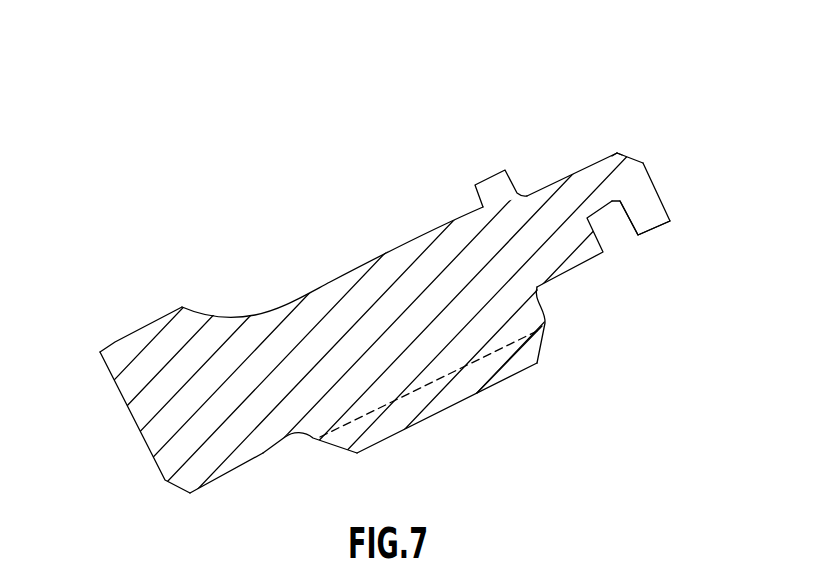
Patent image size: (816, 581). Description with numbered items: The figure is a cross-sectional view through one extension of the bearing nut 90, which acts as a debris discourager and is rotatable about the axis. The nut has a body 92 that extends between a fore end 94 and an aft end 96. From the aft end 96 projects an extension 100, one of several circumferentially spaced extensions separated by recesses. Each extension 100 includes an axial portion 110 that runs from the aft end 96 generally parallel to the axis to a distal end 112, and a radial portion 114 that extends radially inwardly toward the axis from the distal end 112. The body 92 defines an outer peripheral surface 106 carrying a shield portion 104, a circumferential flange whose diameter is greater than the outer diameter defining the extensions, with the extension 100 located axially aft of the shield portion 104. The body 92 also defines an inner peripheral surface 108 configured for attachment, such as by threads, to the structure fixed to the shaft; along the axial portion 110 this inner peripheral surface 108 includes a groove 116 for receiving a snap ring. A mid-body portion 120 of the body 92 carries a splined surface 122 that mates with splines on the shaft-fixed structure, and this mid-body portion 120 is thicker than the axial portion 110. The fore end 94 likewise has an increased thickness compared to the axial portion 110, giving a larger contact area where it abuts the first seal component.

The bearing nut 90 is at (384, 172).
The body 92 is at (370, 303).
The fore end 94 is at (133, 417).
The aft end 96 is at (546, 306).
The extension 100 is at (626, 140).
The shield portion 104 is at (492, 183).
The outer peripheral surface 106 is at (438, 227).
The inner peripheral surface 108 is at (604, 253).
The axial portion 110 is at (584, 192).
The distal end 112 is at (656, 160).
The radial portion 114 is at (648, 199).
The groove 116 is at (639, 236).
The mid-body portion 120 is at (330, 408).
The splined surface 122 is at (377, 428).